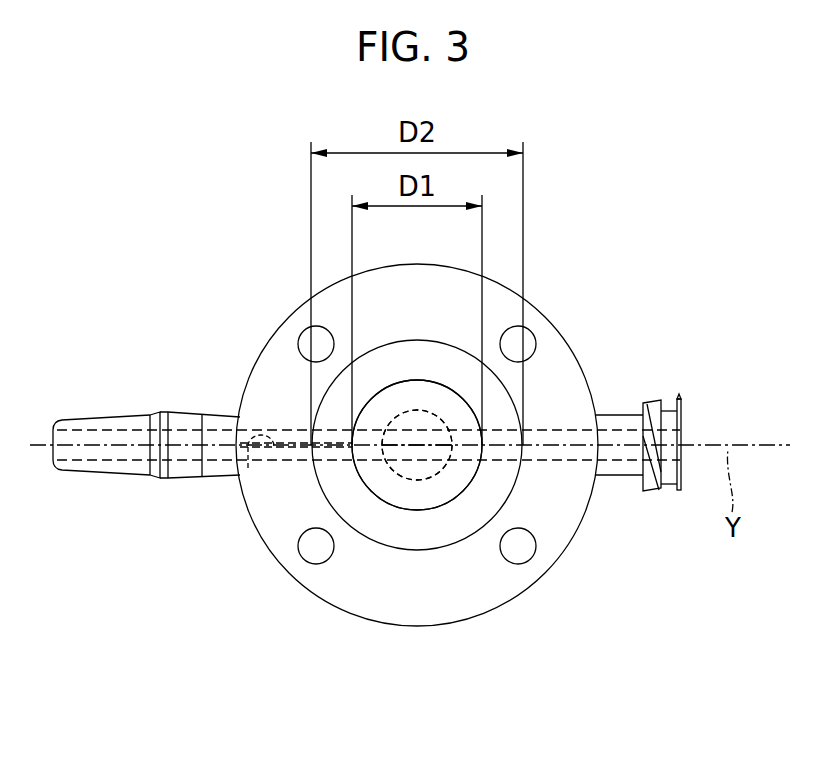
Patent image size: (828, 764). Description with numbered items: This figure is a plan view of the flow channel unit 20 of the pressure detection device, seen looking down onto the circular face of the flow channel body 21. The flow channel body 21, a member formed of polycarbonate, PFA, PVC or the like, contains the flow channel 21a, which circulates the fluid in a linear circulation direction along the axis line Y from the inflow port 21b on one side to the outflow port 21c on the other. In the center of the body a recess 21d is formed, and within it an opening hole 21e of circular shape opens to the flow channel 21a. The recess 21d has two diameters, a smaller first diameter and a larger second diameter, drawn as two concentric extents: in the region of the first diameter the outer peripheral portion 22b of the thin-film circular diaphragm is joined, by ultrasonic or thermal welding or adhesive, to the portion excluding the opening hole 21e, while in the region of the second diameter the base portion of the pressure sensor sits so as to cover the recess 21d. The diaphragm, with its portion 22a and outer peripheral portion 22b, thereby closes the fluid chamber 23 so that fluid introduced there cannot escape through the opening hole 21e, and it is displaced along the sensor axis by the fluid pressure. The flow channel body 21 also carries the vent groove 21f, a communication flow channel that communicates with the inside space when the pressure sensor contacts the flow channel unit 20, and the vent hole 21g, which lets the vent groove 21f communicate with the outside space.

The flow channel unit 20 is at (640, 313).
The flow channel body 21 is at (548, 320).
The flow channel 21a is at (556, 458).
The inflow port 21b is at (682, 440).
The outflow port 21c is at (50, 432).
The recess 21d is at (401, 397).
The opening hole 21e is at (438, 482).
The vent groove 21f is at (308, 454).
The vent hole 21g is at (248, 470).
The hole portion 22a is at (395, 463).
The outer peripheral portion 22b is at (443, 405).
The fluid chamber 23 is at (412, 458).